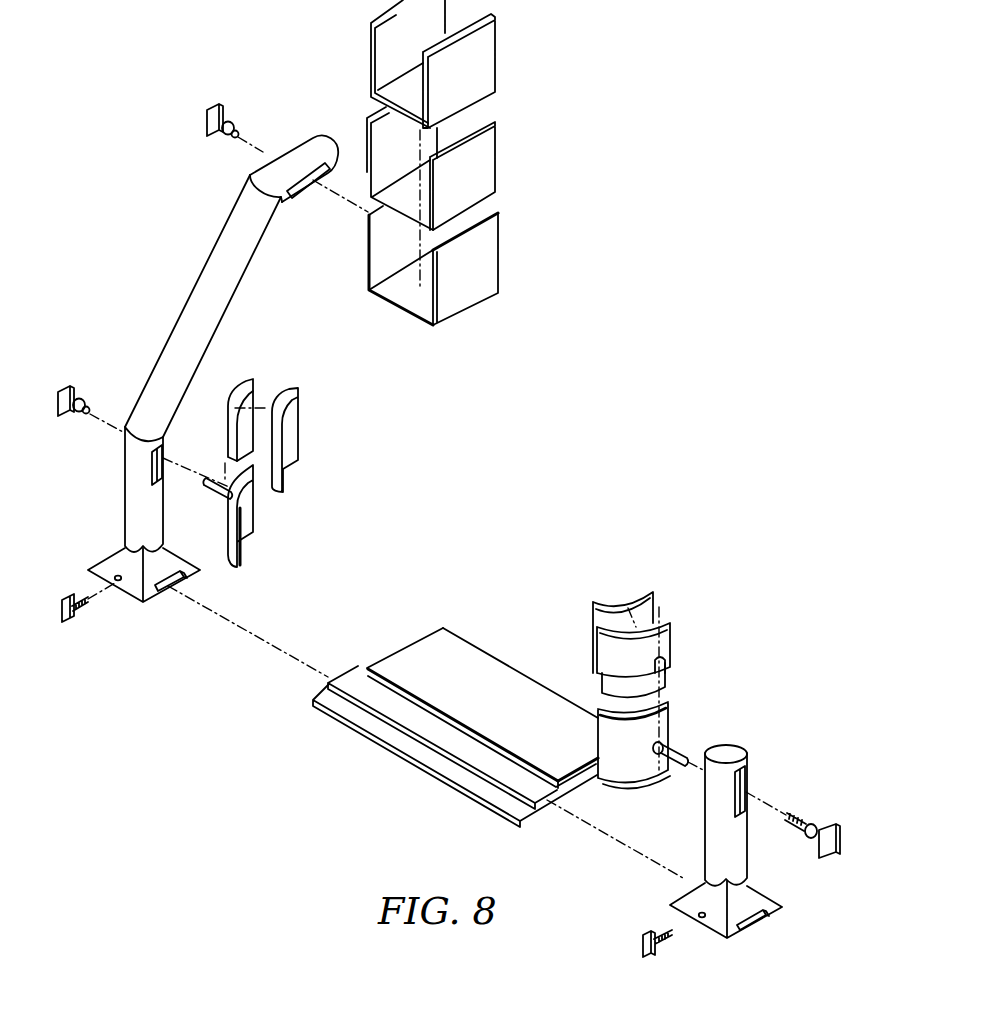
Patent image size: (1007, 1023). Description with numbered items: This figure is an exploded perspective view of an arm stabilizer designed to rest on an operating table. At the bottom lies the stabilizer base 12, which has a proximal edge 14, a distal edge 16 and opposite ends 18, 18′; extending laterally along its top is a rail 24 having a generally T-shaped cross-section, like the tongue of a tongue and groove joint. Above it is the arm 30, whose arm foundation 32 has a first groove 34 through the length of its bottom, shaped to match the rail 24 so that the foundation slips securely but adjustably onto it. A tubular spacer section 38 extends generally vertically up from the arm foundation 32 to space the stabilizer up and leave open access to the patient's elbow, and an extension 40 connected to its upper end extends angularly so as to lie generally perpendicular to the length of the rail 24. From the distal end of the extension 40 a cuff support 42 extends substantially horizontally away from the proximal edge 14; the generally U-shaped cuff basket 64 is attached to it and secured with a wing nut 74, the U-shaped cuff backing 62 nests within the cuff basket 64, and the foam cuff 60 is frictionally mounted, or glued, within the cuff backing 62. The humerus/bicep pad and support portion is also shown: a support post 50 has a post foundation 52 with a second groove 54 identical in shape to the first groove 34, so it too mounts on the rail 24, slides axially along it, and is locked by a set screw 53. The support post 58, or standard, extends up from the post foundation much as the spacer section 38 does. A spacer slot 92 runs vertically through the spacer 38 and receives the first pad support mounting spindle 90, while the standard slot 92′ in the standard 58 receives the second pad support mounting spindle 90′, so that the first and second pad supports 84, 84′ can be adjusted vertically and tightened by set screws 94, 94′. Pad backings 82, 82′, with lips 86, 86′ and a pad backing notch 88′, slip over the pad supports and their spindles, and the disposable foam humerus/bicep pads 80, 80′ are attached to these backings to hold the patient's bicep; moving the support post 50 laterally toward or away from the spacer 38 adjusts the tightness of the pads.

The stabilizer base 12 is at (482, 683).
The proximal edge 14 is at (368, 737).
The distal edge 16 is at (537, 687).
The end 18 is at (397, 647).
The end 18′ is at (604, 793).
The rail 24 is at (349, 681).
The arm 30 is at (177, 372).
The arm foundation 32 is at (108, 603).
The first groove 34 is at (160, 590).
The spacer section 38 is at (104, 489).
The extension 40 is at (236, 255).
The cuff support 42 is at (286, 160).
The support post 50 is at (731, 867).
The post foundation 52 is at (729, 939).
The set screw 53 is at (648, 948).
The second groove 54 is at (755, 920).
The support post 58 is at (762, 811).
The foam cuff 60 is at (486, 62).
The cuff backing 62 is at (488, 158).
The cuff basket 64 is at (486, 263).
The wing nut 74 is at (212, 124).
The first humerus/bicep pad 80 is at (290, 393).
The second humerus/bicep pad 80′ is at (640, 592).
The pad backing 82 is at (240, 396).
The pad backing 82′ is at (679, 660).
The first pad support 84 is at (245, 525).
The second pad support 84′ is at (643, 760).
The lip 86 is at (233, 440).
The lip 86′ is at (662, 636).
The pad backing notch 88′ is at (668, 661).
The first pad support mounting spindle 90 is at (207, 487).
The second pad support mounting spindle 90′ is at (677, 748).
The spacer slot 92 is at (152, 466).
The standard slot 92′ is at (738, 777).
The set screw 94 is at (60, 396).
The set screw 94′ is at (822, 831).